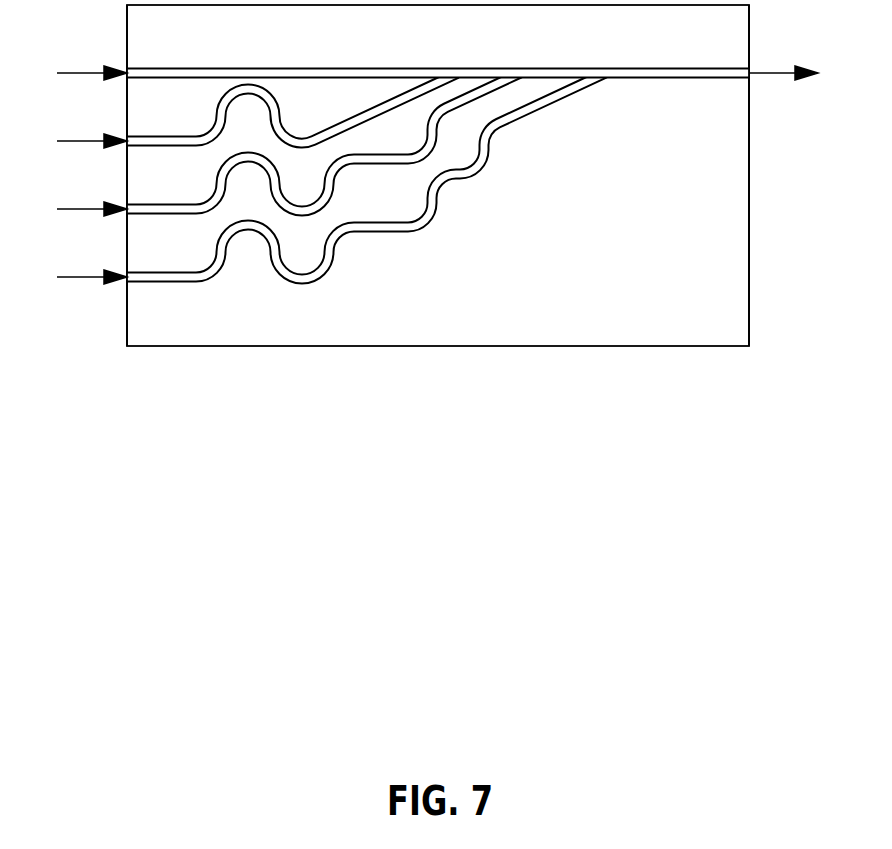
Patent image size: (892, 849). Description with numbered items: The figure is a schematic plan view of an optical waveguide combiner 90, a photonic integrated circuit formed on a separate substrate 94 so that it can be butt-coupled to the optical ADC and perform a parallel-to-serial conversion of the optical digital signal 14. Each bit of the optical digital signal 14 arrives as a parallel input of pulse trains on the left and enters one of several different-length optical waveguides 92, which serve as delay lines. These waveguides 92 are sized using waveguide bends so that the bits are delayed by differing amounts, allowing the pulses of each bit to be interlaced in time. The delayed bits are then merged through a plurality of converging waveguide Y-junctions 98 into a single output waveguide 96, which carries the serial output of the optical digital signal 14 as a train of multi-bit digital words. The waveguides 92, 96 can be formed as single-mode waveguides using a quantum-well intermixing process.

The optical waveguide combiner 90 is at (438, 224).
The optical waveguides 92 is at (165, 78).
The separate substrate 94 is at (684, 313).
The single output waveguide 96 is at (675, 67).
The converging waveguide Y-junctions 98 is at (511, 72).
The optical digital signal 14 is at (83, 288).